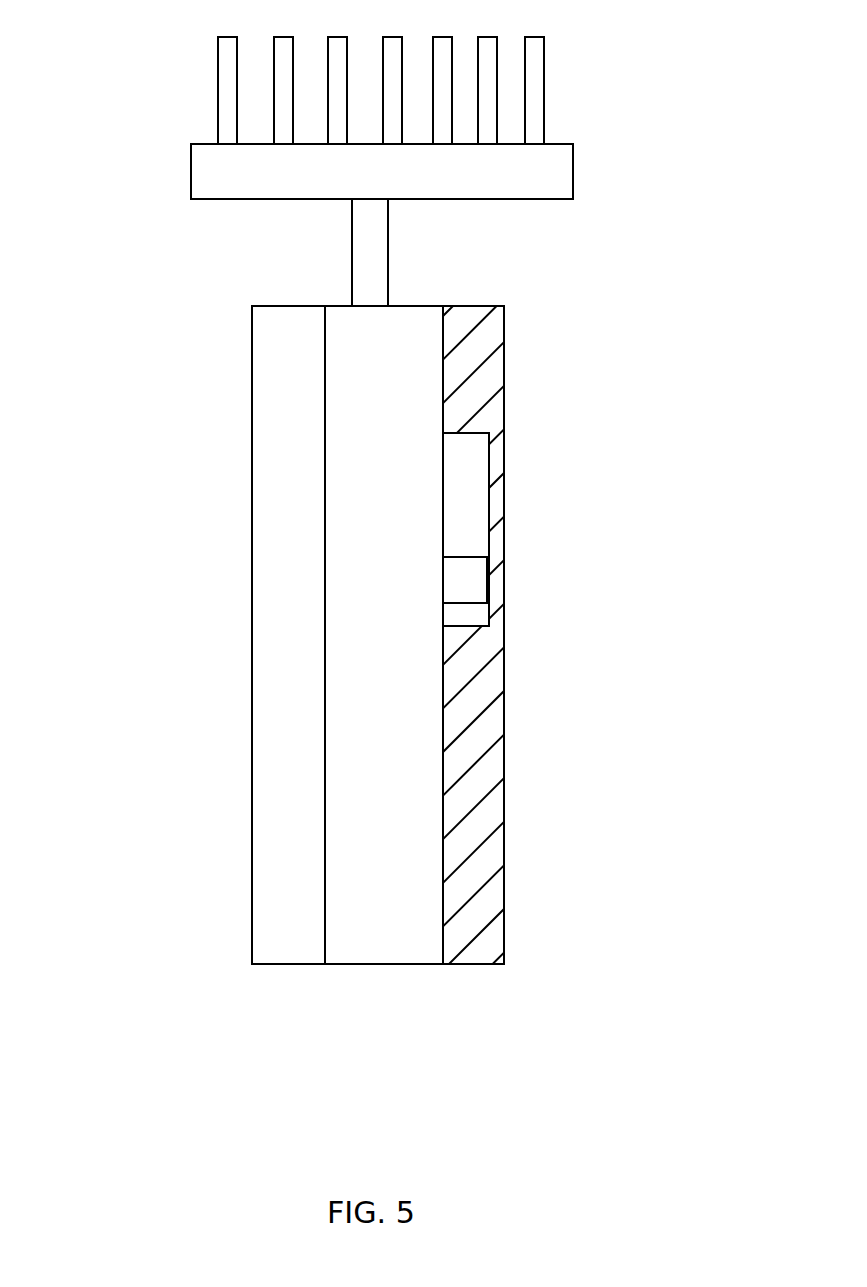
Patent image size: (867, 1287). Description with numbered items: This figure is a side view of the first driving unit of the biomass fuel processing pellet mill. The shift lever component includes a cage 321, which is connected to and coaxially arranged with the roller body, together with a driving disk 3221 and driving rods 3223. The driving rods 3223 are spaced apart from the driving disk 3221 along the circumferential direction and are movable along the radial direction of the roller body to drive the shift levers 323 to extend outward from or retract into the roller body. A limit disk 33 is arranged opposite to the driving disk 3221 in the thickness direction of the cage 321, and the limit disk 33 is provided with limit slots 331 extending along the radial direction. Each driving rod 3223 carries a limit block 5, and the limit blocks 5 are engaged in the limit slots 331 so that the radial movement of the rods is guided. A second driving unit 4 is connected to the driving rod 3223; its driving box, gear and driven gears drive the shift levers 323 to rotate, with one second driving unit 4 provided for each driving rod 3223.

The shift lever 323 is at (544, 90).
The second driving unit 4 is at (573, 170).
The driving rod 3223 is at (388, 252).
The driving disk 3221 is at (285, 852).
The cage 321 is at (377, 918).
The limit disk 33 is at (480, 782).
The limit slot 331 is at (463, 477).
The limit block 5 is at (468, 583).